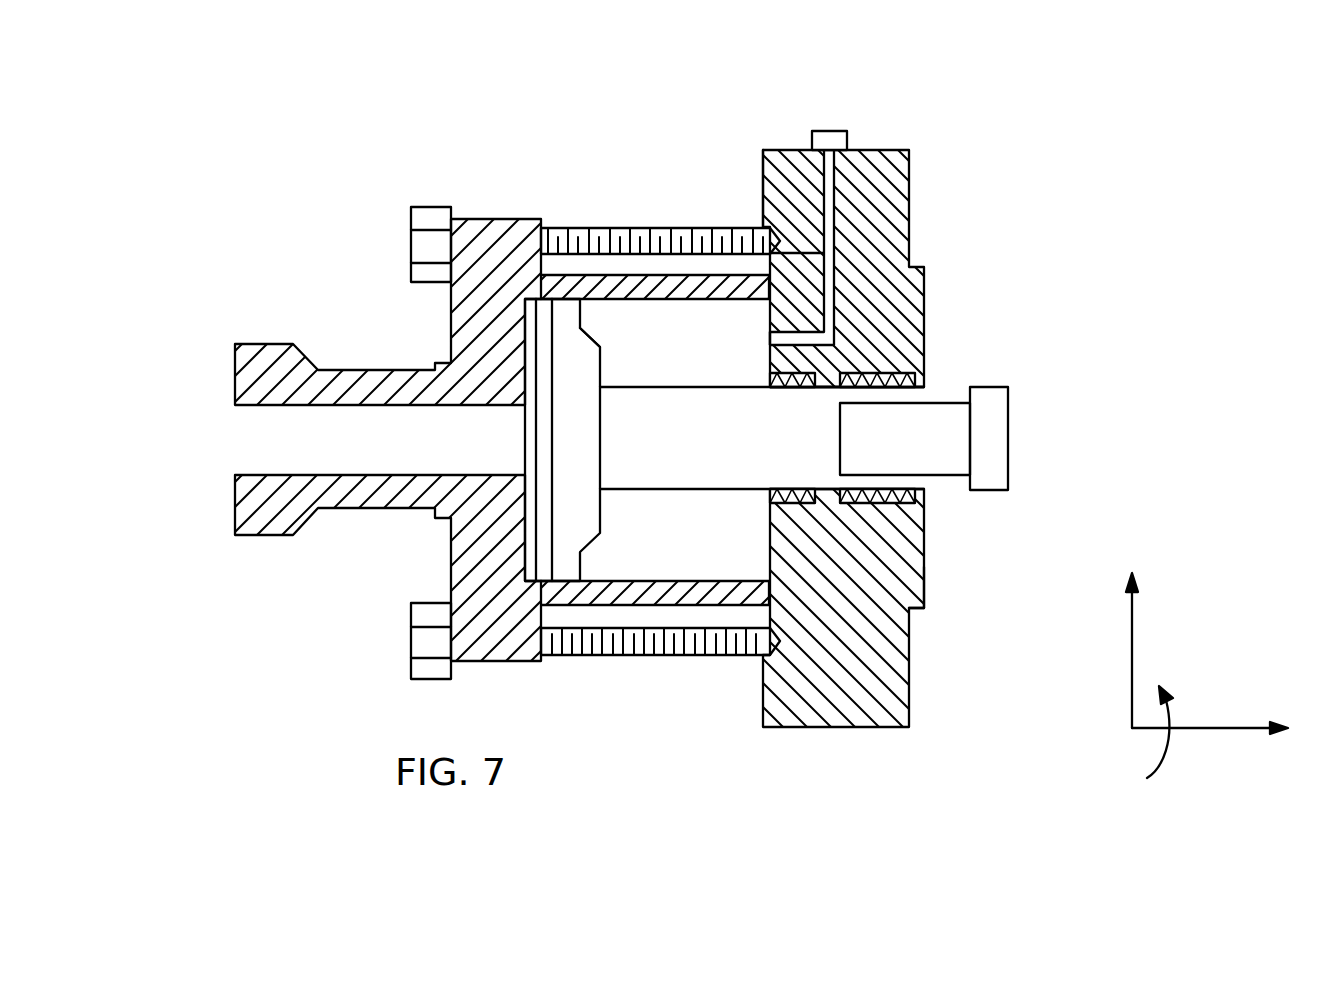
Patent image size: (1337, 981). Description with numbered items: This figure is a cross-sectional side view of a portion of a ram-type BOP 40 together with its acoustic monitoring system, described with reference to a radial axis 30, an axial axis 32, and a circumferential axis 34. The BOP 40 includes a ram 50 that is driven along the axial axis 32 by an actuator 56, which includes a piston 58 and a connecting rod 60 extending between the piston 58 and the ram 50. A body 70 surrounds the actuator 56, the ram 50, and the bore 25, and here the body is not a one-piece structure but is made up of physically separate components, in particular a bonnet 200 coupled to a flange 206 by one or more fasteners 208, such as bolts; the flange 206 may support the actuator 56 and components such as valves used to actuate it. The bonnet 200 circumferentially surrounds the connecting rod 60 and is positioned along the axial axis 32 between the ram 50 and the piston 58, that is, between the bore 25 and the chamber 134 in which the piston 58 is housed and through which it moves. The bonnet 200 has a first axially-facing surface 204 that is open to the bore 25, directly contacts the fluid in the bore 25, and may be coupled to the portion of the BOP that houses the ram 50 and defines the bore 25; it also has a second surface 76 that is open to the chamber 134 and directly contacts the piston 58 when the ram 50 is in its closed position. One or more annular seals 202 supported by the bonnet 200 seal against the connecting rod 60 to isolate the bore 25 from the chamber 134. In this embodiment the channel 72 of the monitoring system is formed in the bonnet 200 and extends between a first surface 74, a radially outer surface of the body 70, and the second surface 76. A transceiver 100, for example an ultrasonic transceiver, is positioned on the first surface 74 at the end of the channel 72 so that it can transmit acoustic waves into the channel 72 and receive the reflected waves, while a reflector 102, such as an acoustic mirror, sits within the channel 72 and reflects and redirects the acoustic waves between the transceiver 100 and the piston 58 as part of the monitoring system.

The bore 25 is at (1008, 584).
The radial axis 30 is at (1132, 657).
The axial axis 32 is at (1205, 728).
The circumferential axis 34 is at (1174, 742).
The BOP 40 is at (423, 405).
The ram 50 is at (1000, 387).
The actuator 56 is at (626, 441).
The piston 58 is at (573, 313).
The connecting rod 60 is at (823, 407).
The body 70 is at (836, 379).
The channel 72 is at (843, 247).
The first surface 74 is at (787, 150).
The second surface 76 is at (770, 324).
The transceiver 100 is at (830, 131).
The reflector 102 is at (779, 371).
The chamber 134 is at (695, 347).
The bonnet 200 is at (896, 160).
The seals 202 is at (839, 491).
The first axially-facing surface 204 is at (925, 610).
The flange 206 is at (500, 219).
The fasteners 208 is at (706, 231).